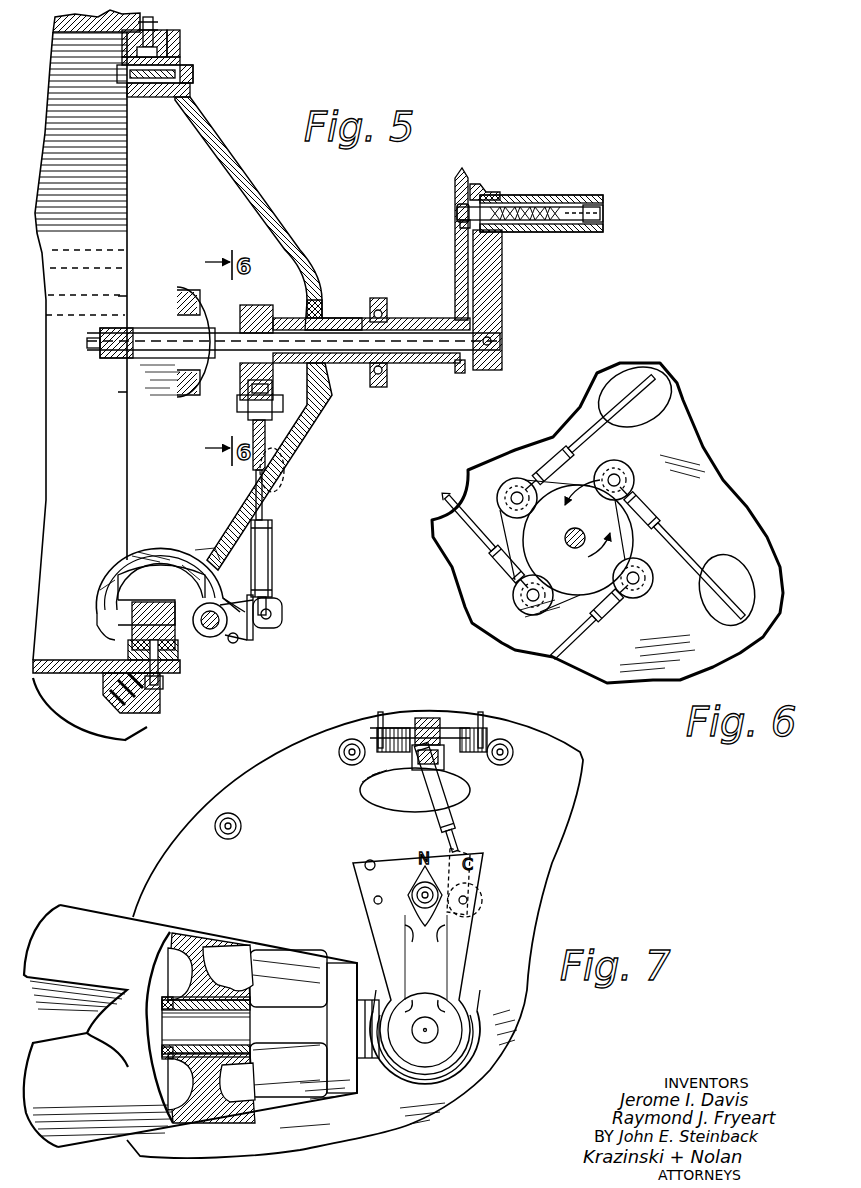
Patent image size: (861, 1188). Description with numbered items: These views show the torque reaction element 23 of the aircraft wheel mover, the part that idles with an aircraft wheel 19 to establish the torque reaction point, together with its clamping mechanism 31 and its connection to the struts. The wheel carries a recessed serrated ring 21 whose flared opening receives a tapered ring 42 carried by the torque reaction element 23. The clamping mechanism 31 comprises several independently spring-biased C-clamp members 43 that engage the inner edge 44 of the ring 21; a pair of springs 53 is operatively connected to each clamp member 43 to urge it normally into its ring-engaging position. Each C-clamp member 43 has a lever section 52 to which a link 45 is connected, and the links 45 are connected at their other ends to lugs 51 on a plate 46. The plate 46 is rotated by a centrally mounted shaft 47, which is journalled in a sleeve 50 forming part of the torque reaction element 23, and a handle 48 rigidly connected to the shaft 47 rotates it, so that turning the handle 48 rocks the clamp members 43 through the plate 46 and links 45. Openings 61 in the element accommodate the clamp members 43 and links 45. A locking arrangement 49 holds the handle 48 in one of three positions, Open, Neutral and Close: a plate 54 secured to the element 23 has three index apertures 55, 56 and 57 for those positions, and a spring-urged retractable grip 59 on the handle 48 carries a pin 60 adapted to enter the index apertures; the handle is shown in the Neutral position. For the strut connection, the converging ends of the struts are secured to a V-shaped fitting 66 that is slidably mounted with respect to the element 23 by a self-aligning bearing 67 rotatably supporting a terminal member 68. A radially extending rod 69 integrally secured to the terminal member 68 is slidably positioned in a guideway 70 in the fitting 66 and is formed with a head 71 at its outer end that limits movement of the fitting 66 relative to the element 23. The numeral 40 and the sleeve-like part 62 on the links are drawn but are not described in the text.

In FIG. 5, the aircraft wheel 19 is at (150, 727).
In FIG. 5, the recessed ring 21 is at (176, 658).
In FIG. 5, the torque reaction element 23 is at (283, 225).
In FIG. 7, the torque reaction element 23 is at (553, 805).
In FIG. 5, the clamping mechanism 31 is at (117, 552).
In FIG. 7, the clamping mechanism 31 is at (420, 703).
In FIG. 7, the arm slot 40 is at (405, 912).
In FIG. 5, the tapered ring 42 is at (140, 620).
In FIG. 5, the C-clamp members 43 is at (165, 545).
In FIG. 7, the C-clamp members 43 is at (433, 720).
In FIG. 5, the inner edge 44 is at (128, 646).
In FIG. 5, the links 45 is at (265, 498).
In FIG. 6, the links 45 is at (569, 447).
In FIG. 7, the links 45 is at (456, 848).
In FIG. 5, the plate 46 is at (262, 305).
In FIG. 6, the plate 46 is at (580, 490).
In FIG. 5, the shaft 47 is at (430, 336).
In FIG. 6, the shaft 47 is at (586, 548).
In FIG. 7, the shaft 47 is at (420, 1038).
In FIG. 5, the handle 48 is at (571, 196).
In FIG. 5, the locking arrangement 49 is at (468, 172).
In FIG. 5, the sleeve 50 is at (431, 366).
In FIG. 5, the lugs 51 is at (240, 414).
In FIG. 6, the lugs 51 is at (621, 470).
In FIG. 5, the lever section 52 is at (240, 600).
In FIG. 5, the springs 53 is at (218, 640).
In FIG. 7, the springs 53 is at (383, 718).
In FIG. 5, the plate 54 is at (456, 266).
In FIG. 7, the plate 54 is at (467, 948).
In FIG. 7, the index aperture 55 is at (374, 900).
In FIG. 5, the index aperture 56 is at (458, 223).
In FIG. 7, the index aperture 56 is at (413, 887).
In FIG. 7, the index aperture 57 is at (478, 912).
In FIG. 5, the retractable grip 59 is at (603, 216).
In FIG. 5, the pin 60 is at (458, 212).
In FIG. 5, the openings 61 is at (279, 462).
In FIG. 6, the openings 61 is at (660, 394).
In FIG. 7, the openings 61 is at (380, 788).
In FIG. 5, the sleeve 62 is at (276, 556).
In FIG. 6, the sleeve 62 is at (536, 470).
In FIG. 7, the sleeve 62 is at (446, 795).
In FIG. 7, the V-shaped fitting 66 is at (97, 897).
In FIG. 5, the self-aligning bearing 67 is at (386, 386).
In FIG. 5, the terminal member 68 is at (378, 297).
In FIG. 7, the terminal member 68 is at (482, 1052).
In FIG. 7, the rod 69 is at (228, 968).
In FIG. 7, the guideway 70 is at (237, 1082).
In FIG. 7, the head 71 is at (170, 1060).